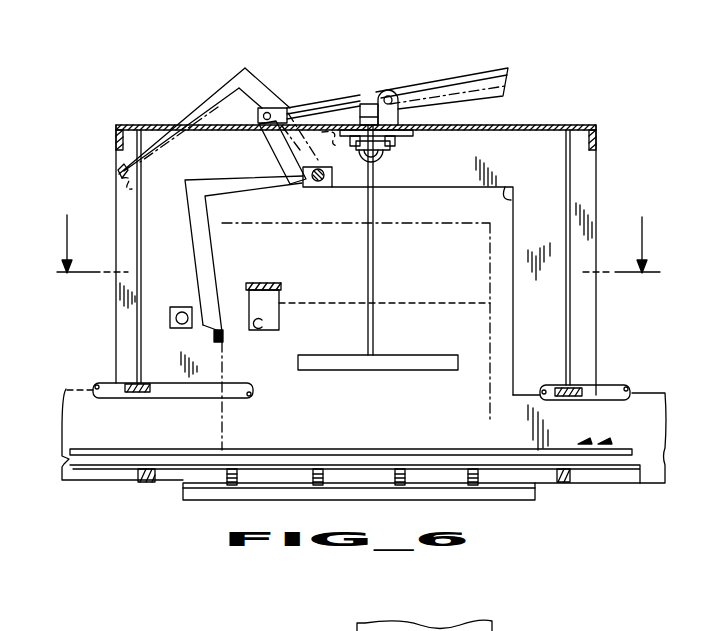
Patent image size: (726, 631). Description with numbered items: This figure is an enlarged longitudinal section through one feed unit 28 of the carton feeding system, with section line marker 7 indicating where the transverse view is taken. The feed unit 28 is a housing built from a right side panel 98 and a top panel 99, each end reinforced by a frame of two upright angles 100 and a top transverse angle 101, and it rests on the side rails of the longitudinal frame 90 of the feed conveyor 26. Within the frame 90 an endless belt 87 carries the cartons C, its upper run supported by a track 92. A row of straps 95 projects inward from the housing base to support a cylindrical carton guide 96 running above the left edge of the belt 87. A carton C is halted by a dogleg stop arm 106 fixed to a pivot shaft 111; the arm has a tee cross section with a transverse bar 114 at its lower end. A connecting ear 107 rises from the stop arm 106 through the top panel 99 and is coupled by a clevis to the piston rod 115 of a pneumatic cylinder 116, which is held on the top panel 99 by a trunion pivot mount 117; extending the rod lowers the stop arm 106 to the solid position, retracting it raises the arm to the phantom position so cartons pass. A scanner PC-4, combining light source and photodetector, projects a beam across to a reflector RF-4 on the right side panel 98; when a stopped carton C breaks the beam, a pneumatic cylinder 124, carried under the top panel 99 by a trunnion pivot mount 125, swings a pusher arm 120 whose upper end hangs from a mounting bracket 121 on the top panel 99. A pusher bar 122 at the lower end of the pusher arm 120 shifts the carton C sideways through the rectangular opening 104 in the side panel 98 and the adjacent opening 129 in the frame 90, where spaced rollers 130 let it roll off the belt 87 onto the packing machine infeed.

The feed unit 28 is at (582, 101).
The top panel 99 is at (507, 130).
The top transverse angle 101 is at (116, 136).
The upright angles 100 is at (118, 192).
The right side panel 98 is at (558, 181).
The rectangular opening 104 is at (505, 190).
The carton C is at (490, 225).
The pneumatic cylinder 116 is at (507, 73).
The trunion pivot mount 117 is at (393, 97).
The mounting bracket 121 is at (364, 103).
The piston rod 115 is at (309, 105).
The connecting ear 107 is at (256, 153).
The pivot shaft 111 is at (316, 187).
The stop arm 106 is at (240, 70).
The transverse bar 114 is at (118, 178).
The trunnion pivot mount 125 is at (394, 147).
The pneumatic cylinder 124 is at (386, 167).
The pusher arm 120 is at (373, 245).
The pusher bar 122 is at (395, 358).
The reflector RF-4 is at (176, 307).
The scanner PC-4 is at (284, 323).
The carton guide 96 is at (108, 383).
The straps 95 is at (148, 393).
The longitudinal frame 90 is at (650, 405).
The feed conveyor 26 is at (636, 449).
The endless belt 87 is at (145, 449).
The opening 129 is at (497, 420).
The rollers 130 is at (318, 469).
The track 92 is at (608, 469).
The section line 7 is at (358, 244).